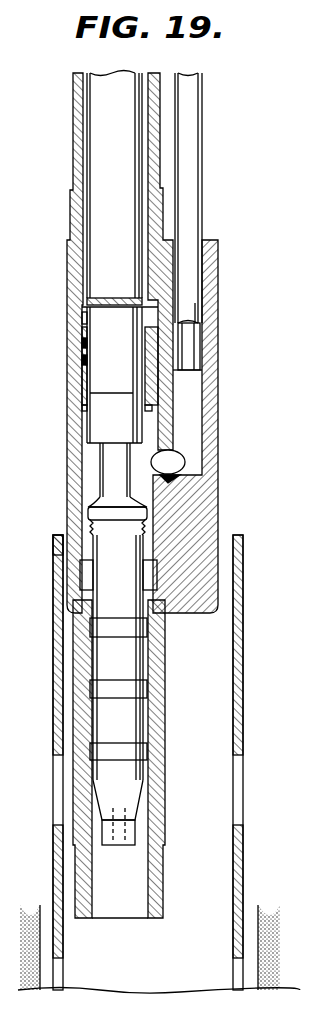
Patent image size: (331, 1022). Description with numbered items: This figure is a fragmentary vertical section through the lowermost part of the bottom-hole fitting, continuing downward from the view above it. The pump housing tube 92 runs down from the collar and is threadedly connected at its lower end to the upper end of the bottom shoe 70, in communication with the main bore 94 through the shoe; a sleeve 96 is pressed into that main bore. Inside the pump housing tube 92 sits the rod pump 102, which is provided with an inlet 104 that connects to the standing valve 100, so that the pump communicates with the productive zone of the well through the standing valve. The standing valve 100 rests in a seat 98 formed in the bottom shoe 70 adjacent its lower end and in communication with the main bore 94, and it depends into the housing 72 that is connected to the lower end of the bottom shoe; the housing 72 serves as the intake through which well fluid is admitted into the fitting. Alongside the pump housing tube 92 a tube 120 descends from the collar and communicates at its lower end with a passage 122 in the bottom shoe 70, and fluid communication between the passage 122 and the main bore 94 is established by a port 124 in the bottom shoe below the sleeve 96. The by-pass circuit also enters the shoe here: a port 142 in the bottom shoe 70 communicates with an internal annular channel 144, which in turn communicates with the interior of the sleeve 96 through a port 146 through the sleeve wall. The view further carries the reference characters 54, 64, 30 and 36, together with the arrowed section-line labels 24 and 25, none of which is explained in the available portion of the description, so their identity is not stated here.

The pump housing tube 92 is at (73, 130).
The rod pump 102 is at (128, 189).
The tube 120 is at (199, 95).
The bottom shoe 70 is at (212, 388).
The passage 122 is at (196, 322).
The port 124 is at (186, 453).
The sleeve 96 is at (82, 373).
The main bore 94 is at (88, 392).
The port 146 is at (82, 317).
The internal annular channel 144 is at (82, 345).
The port 142 is at (82, 360).
The inlet 104 is at (115, 487).
The standing valve 100 is at (98, 658).
The housing 72 is at (80, 690).
The casing 54 is at (52, 746).
The seat 98 is at (58, 548).
The casing 64 is at (243, 846).
The ground surface 30 is at (50, 990).
The earth 36 is at (40, 978).
The section line 25 is at (60, 462).
The section line 24 is at (6, 437).